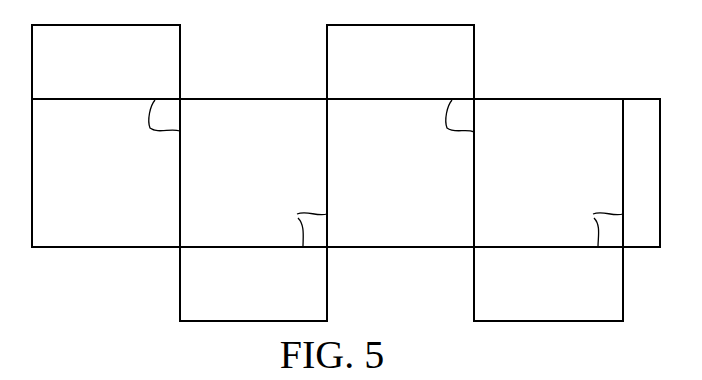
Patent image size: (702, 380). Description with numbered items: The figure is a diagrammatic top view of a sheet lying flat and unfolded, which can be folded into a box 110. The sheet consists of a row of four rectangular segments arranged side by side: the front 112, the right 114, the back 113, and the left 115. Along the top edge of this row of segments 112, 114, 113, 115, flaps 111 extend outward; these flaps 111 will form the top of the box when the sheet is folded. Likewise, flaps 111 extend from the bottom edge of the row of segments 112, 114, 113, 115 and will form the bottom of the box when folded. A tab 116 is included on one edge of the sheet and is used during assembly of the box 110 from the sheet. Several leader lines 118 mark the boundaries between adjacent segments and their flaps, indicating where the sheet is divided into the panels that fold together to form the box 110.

The box 110 is at (99, 273).
The flaps 111 is at (86, 79).
The front segment 112 is at (86, 184).
The back segment 113 is at (380, 184).
The right segment 114 is at (233, 184).
The left segment 115 is at (528, 184).
The tab 116 is at (645, 117).
The fold line 118 is at (365, 173).